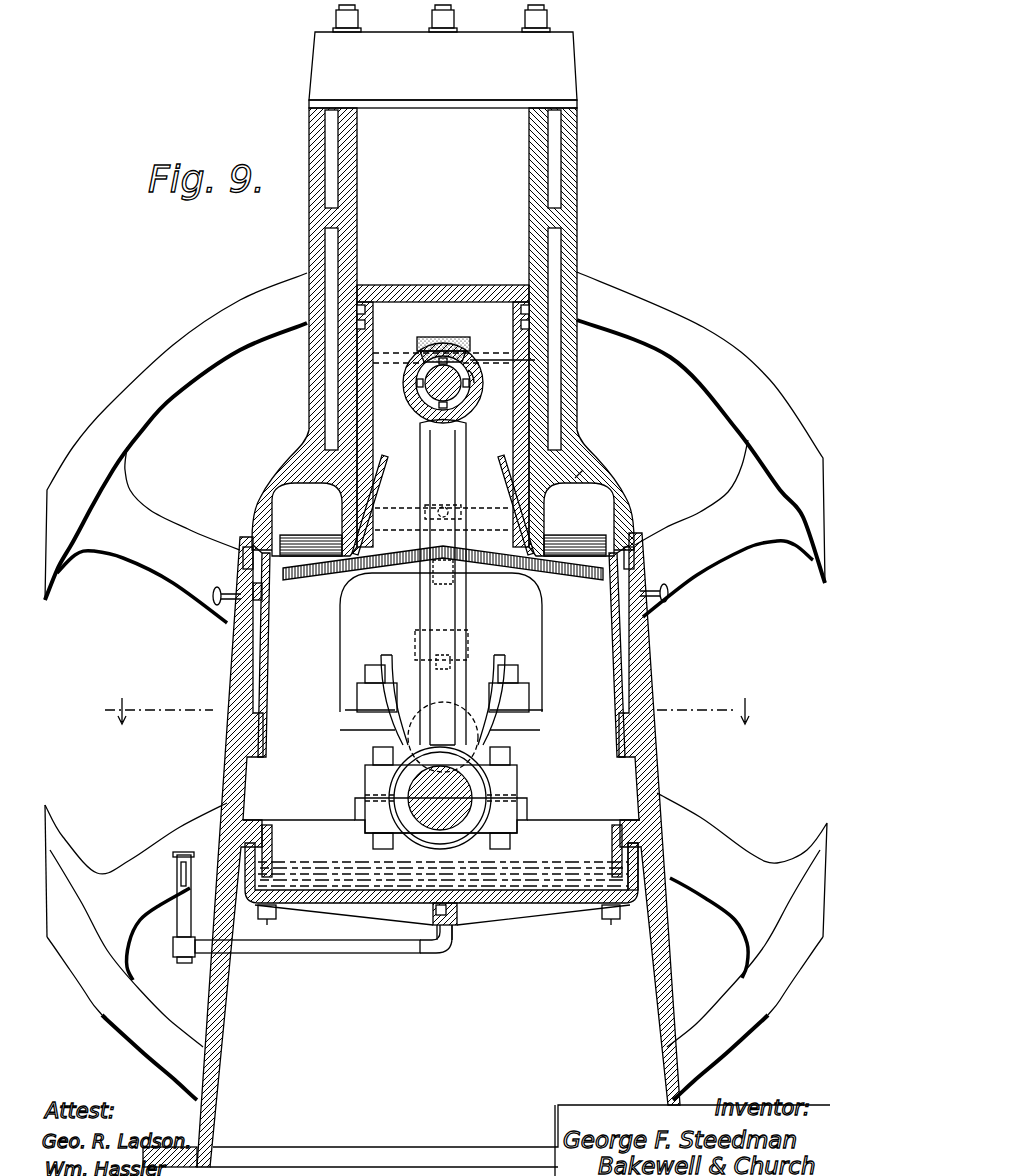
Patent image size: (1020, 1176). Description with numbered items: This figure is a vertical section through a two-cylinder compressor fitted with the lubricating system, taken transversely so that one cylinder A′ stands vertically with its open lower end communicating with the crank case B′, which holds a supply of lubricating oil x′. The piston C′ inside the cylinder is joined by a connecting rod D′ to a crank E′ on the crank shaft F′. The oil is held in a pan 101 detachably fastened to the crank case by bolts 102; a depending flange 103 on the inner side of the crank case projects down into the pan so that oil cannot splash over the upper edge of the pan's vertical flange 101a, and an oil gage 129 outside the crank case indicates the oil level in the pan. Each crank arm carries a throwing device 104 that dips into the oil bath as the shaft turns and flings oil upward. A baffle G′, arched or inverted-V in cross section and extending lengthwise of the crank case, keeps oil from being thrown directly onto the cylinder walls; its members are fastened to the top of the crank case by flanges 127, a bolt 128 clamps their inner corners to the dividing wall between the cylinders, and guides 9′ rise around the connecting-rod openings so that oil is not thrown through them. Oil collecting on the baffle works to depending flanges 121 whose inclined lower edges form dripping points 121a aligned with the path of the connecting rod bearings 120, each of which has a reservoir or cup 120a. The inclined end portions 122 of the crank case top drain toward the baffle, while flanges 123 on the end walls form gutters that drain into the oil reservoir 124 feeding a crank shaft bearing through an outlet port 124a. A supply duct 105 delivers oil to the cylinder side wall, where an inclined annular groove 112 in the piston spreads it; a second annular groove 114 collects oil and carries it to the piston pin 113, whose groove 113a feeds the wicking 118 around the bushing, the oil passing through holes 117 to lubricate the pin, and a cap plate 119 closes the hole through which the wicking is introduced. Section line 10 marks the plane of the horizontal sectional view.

The cylinders A′ is at (578, 222).
The crank case B′ is at (655, 778).
The piston C′ is at (357, 412).
The connecting rod D′ is at (440, 607).
The crank E′ is at (420, 790).
The crank shaft F′ is at (412, 693).
The baffle G′ is at (522, 582).
The guides 9′ is at (386, 468).
The section line 10— 10 is at (436, 711).
The pan 101 is at (560, 893).
The vertically disposed flange of the pan 101a is at (643, 862).
The bolts 102 is at (426, 926).
The depending flange 103 is at (276, 843).
The throwing device 104 is at (447, 917).
The supply duct 105 is at (448, 512).
The annular groove 112 is at (408, 510).
The piston pin 113 is at (450, 392).
The groove 113a is at (472, 380).
The annular groove 114 is at (535, 360).
The holes 117 is at (423, 385).
The wicking 118 is at (452, 338).
The cap plate 119 is at (460, 338).
The connecting rod bearings 120 is at (473, 783).
The reservoir or cup 120a is at (518, 807).
The depending flanges 121 is at (274, 600).
The dripping point 121a is at (245, 600).
The end portions of the crank case 122 is at (585, 468).
The flanges 123 is at (315, 522).
The oil reservoir 124 is at (466, 648).
The outlet port 124a is at (448, 663).
The flange 127 is at (243, 562).
The bolt 128 is at (446, 578).
The oil gage 129 is at (182, 900).
The lubricating oil x′ is at (510, 882).